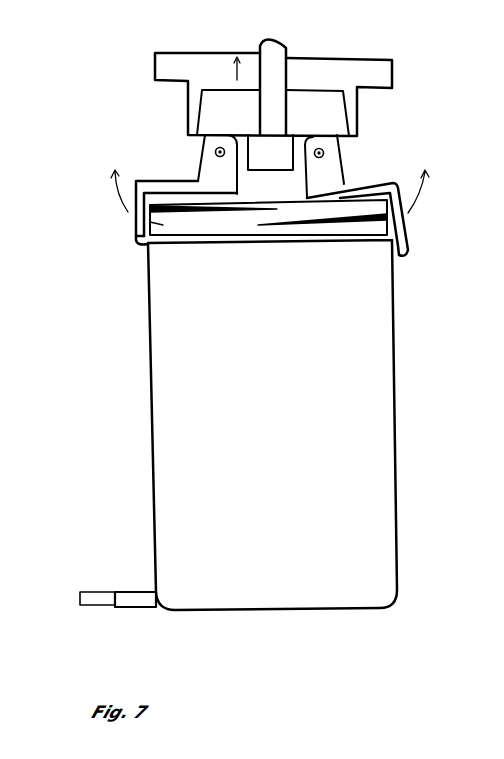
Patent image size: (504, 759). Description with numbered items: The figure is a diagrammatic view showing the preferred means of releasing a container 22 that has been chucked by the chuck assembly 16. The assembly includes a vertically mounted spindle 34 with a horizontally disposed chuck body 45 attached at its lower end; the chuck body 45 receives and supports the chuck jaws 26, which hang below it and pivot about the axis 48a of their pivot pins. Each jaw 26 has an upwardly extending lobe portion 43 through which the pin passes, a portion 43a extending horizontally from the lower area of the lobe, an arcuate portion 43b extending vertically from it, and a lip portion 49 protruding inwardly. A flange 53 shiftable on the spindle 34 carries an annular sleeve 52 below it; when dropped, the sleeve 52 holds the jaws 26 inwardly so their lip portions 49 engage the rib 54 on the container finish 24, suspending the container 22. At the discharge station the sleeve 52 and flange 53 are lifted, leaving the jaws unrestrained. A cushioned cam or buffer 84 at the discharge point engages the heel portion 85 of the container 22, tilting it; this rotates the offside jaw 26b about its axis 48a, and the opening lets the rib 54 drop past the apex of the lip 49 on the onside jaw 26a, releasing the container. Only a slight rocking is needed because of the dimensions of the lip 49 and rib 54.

The chuck assembly 16 is at (421, 151).
The container 22 is at (152, 438).
The container finish 24 is at (135, 222).
The chuck jaws 26 is at (153, 172).
The onside jaw 26a is at (133, 217).
The offside jaw 26b is at (407, 255).
The spindle 34 is at (284, 52).
The lobe portion 43 is at (340, 150).
The horizontal portion 43a is at (167, 180).
The arcuate portion 43b is at (135, 237).
The chuck body 45 is at (268, 168).
The pivot axis 48a is at (318, 148).
The lip portion 49 is at (137, 250).
The annular sleeve 52 is at (186, 108).
The flange 53 is at (393, 72).
The rib 54 is at (262, 250).
The buffer 84 is at (147, 584).
The heel portion 85 is at (167, 602).